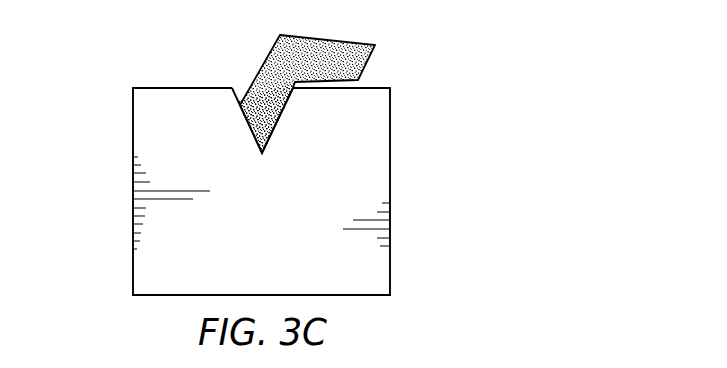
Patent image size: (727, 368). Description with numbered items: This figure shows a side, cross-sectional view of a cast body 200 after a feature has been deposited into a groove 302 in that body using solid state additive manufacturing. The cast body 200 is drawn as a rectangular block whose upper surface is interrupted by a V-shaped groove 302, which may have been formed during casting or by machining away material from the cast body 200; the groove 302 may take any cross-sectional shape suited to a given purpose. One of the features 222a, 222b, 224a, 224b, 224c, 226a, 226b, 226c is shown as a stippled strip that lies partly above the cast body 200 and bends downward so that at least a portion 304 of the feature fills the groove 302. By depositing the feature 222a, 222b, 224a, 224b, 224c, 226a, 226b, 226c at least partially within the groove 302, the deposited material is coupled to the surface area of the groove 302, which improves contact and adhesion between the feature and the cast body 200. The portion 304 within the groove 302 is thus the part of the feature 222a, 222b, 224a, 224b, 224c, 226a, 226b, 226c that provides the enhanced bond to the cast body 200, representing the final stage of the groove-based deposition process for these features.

The cast body 200 is at (295, 177).
The groove 302 is at (253, 84).
The portion of the feature 304 is at (265, 110).
The feature 222a is at (436, 87).
The feature 222b is at (436, 87).
The feature 224a is at (436, 87).
The feature 224b is at (436, 87).
The feature 224c is at (436, 87).
The feature 226a is at (436, 87).
The feature 226b is at (436, 87).
The feature 226c is at (436, 87).